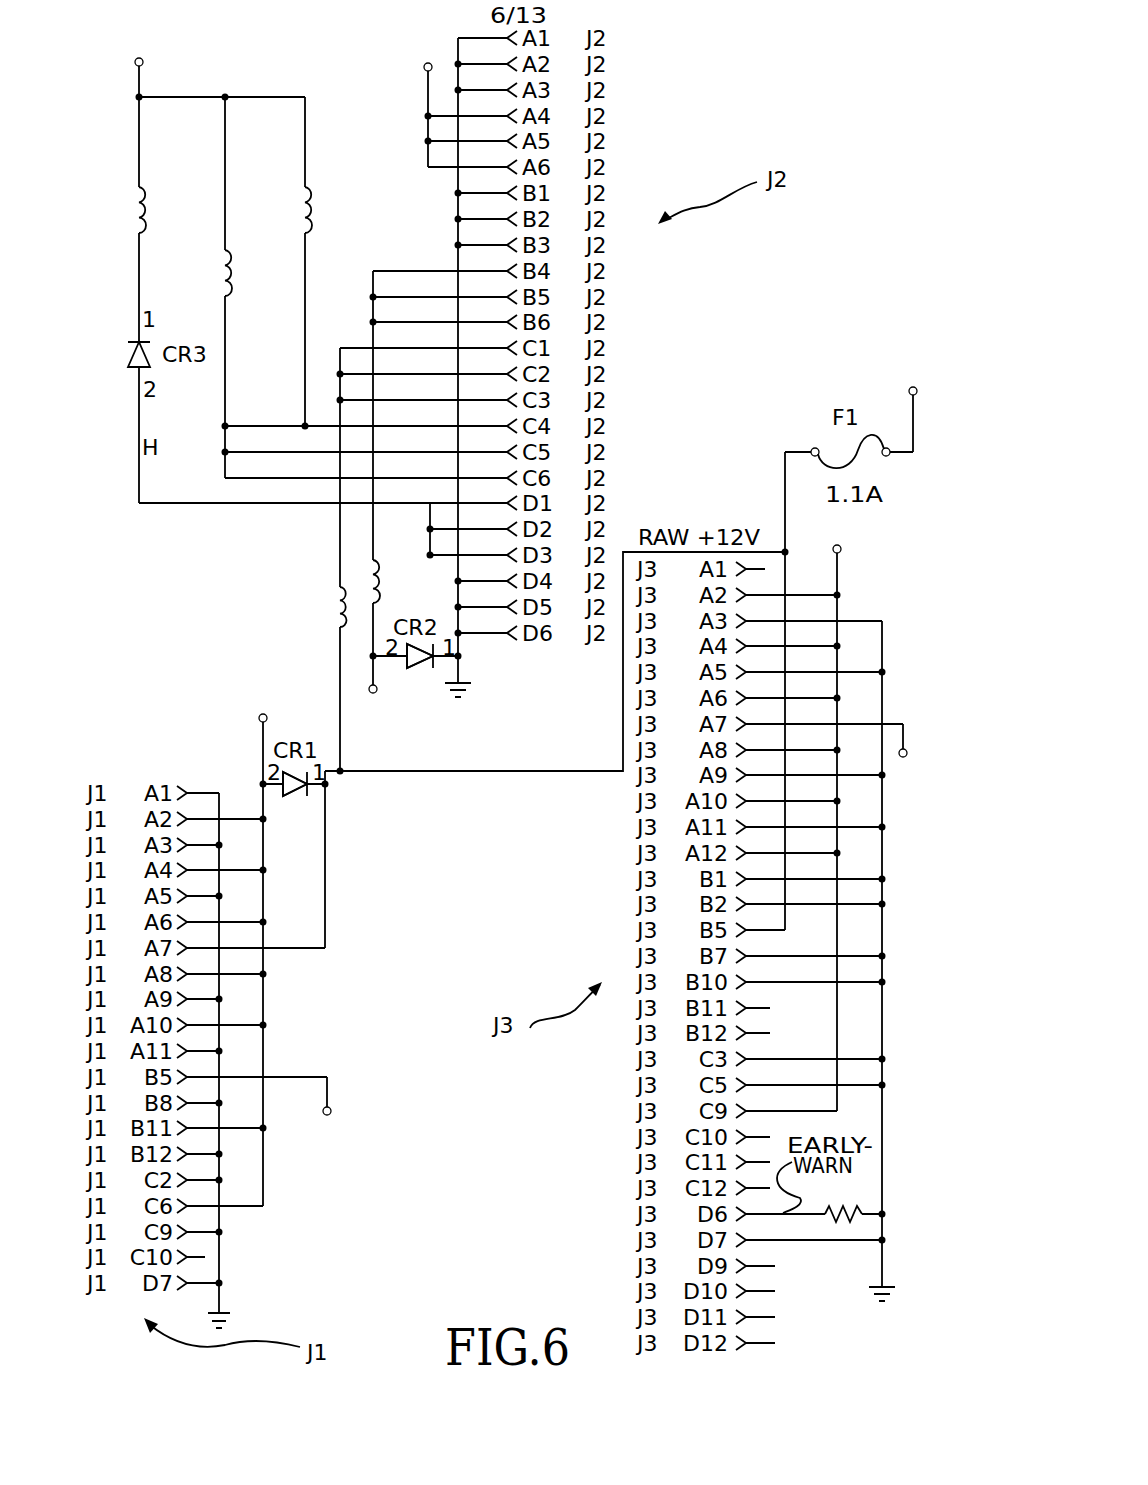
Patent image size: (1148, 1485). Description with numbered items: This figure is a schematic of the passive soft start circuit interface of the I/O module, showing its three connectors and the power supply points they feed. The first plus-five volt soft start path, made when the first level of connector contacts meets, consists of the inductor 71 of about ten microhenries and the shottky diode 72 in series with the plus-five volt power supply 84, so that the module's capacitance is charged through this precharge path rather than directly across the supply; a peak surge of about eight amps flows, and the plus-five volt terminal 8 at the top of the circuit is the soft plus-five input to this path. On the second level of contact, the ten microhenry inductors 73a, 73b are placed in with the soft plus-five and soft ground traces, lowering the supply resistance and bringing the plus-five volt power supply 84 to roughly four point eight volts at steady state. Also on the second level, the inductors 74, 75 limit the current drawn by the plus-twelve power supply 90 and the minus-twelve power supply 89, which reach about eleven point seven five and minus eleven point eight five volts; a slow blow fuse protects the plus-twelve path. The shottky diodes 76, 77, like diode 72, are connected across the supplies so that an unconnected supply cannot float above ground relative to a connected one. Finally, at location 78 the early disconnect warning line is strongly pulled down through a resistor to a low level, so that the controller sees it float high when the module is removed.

The +5V power supply input 8 is at (160, 55).
The inductor 71 is at (135, 187).
The diode 72 is at (123, 352).
The inductor 73a is at (233, 276).
The inductor 73b is at (315, 212).
The inductor 74 is at (340, 588).
The inductor 75 is at (368, 572).
The diode 76 is at (427, 682).
The diode 77 is at (288, 798).
The early disconnect warning location 78 is at (865, 1208).
The +5 volt power supply 84 is at (422, 35).
The -12 power supply 89 is at (387, 723).
The +12 power supply 90 is at (905, 353).